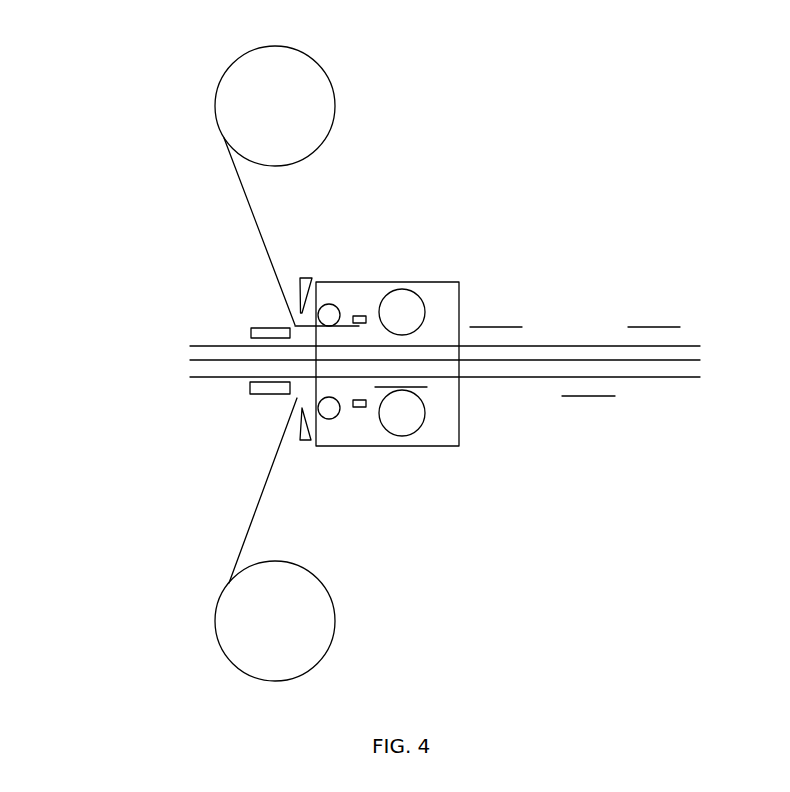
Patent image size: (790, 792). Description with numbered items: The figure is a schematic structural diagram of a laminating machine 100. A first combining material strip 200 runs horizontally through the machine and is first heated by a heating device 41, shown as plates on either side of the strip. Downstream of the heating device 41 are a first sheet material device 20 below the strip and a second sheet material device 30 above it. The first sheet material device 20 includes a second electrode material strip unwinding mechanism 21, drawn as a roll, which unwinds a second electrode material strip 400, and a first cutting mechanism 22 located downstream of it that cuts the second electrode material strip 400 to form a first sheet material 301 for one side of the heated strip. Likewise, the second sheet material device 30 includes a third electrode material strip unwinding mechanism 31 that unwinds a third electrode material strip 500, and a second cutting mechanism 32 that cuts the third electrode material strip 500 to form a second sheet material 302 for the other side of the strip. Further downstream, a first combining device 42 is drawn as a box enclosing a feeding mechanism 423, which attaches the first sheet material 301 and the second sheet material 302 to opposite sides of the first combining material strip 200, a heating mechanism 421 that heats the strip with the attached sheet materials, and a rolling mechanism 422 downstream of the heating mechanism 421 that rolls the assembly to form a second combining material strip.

The laminating machine 100 is at (83, 26).
The second sheet material device 30 is at (324, 179).
The third electrode material strip unwinding mechanism 31 is at (322, 145).
The second cutting mechanism 32 is at (300, 278).
The third electrode material strip 500 is at (256, 217).
The feeding mechanism 423 is at (330, 304).
The rolling mechanism 422 is at (404, 290).
The heating mechanism 421 is at (360, 407).
The first combining device 42 is at (385, 385).
The second sheet material 302 is at (500, 327).
The first combining material strip 200 is at (582, 346).
The first sheet material 301 is at (592, 396).
The heating device 41 is at (256, 394).
The first cutting mechanism 22 is at (306, 440).
The second electrode material strip 400 is at (246, 534).
The first sheet material device 20 is at (340, 544).
The second electrode material strip unwinding mechanism 21 is at (336, 632).